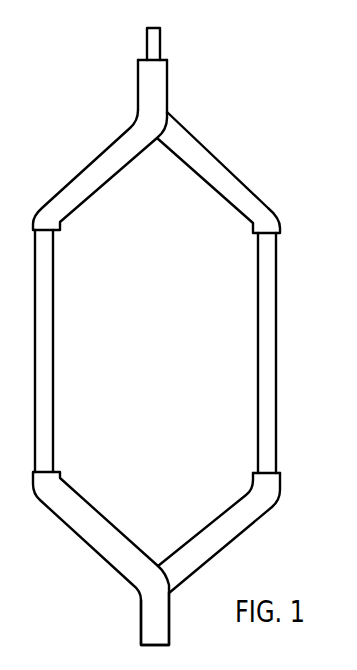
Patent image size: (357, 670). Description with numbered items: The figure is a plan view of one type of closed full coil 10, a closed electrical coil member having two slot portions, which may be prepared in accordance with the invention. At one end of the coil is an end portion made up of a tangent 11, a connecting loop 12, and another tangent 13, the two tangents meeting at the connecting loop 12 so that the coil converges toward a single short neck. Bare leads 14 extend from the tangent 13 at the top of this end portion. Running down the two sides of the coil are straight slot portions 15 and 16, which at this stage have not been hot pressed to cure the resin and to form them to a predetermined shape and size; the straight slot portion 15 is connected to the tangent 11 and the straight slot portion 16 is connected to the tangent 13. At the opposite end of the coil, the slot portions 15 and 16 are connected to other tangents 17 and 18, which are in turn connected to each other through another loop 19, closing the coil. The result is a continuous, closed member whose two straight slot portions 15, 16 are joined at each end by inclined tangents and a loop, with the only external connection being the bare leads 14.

The closed full coil 10 is at (169, 354).
The tangent 11 is at (240, 178).
The connecting loop 12 is at (168, 88).
The tangent 13 is at (105, 183).
The bare leads 14 is at (160, 34).
The straight slot portion 15 is at (53, 352).
The straight slot portion 16 is at (258, 373).
The tangent 17 is at (92, 508).
The tangent 18 is at (219, 514).
The loop 19 is at (169, 617).